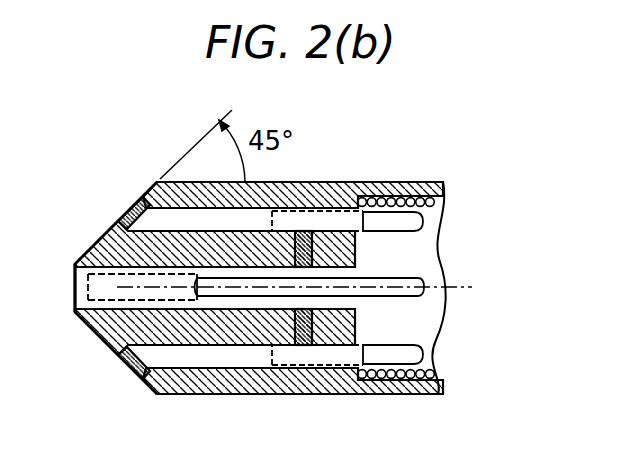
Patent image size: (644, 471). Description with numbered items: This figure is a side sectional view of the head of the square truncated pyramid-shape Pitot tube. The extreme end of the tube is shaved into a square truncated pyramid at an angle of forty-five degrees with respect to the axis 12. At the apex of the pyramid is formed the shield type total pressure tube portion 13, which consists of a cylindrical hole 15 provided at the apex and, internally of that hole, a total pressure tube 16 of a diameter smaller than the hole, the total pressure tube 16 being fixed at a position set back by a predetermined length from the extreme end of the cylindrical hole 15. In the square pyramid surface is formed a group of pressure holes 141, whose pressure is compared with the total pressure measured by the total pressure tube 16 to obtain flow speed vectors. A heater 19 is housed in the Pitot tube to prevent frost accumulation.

The axis 12 is at (462, 288).
The shield type total pressure tube portion 13 is at (80, 278).
The group of pressure holes 141 is at (118, 219).
The cylindrical hole 15 is at (73, 306).
The total pressure tube 16 is at (95, 246).
The heater 19 is at (446, 200).